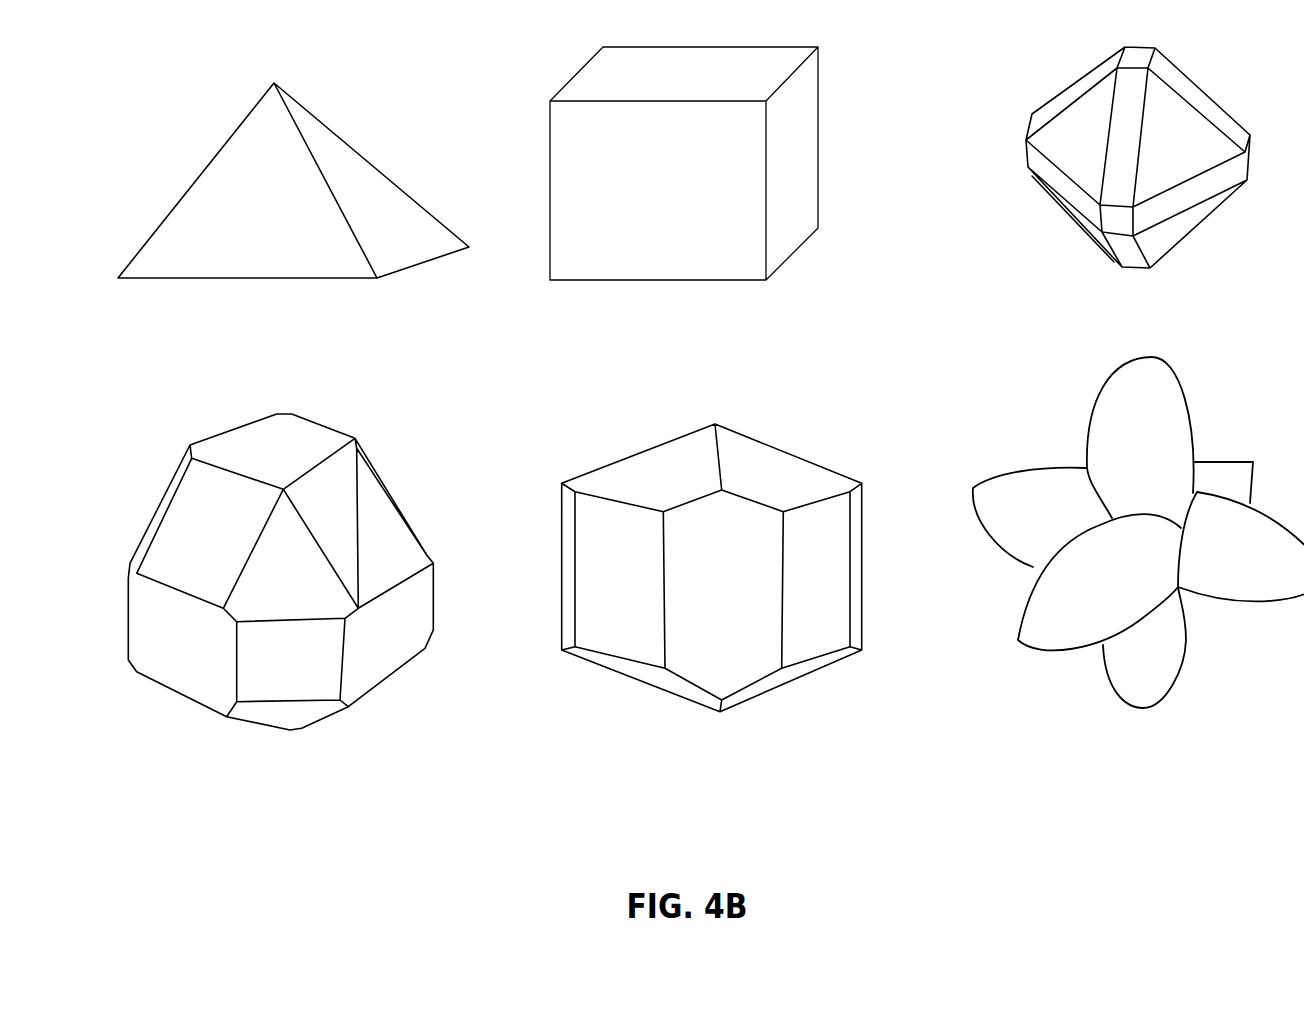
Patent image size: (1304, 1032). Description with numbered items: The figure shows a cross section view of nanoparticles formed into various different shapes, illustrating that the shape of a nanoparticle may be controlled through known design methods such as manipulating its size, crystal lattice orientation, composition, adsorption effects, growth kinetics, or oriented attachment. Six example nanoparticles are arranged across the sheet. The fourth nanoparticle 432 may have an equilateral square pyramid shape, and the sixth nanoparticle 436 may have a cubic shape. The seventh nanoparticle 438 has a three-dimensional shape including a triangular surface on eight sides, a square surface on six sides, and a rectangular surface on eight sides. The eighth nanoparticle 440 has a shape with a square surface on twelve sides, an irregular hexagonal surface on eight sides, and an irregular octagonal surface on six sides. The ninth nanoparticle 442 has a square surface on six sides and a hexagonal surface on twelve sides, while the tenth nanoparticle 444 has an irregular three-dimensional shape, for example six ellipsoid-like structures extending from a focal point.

The fourth nanoparticle 432 is at (234, 224).
The sixth nanoparticle 436 is at (638, 200).
The seventh nanoparticle 438 is at (1155, 153).
The eighth nanoparticle 440 is at (185, 544).
The ninth nanoparticle 442 is at (692, 595).
The tenth nanoparticle 444 is at (1078, 597).